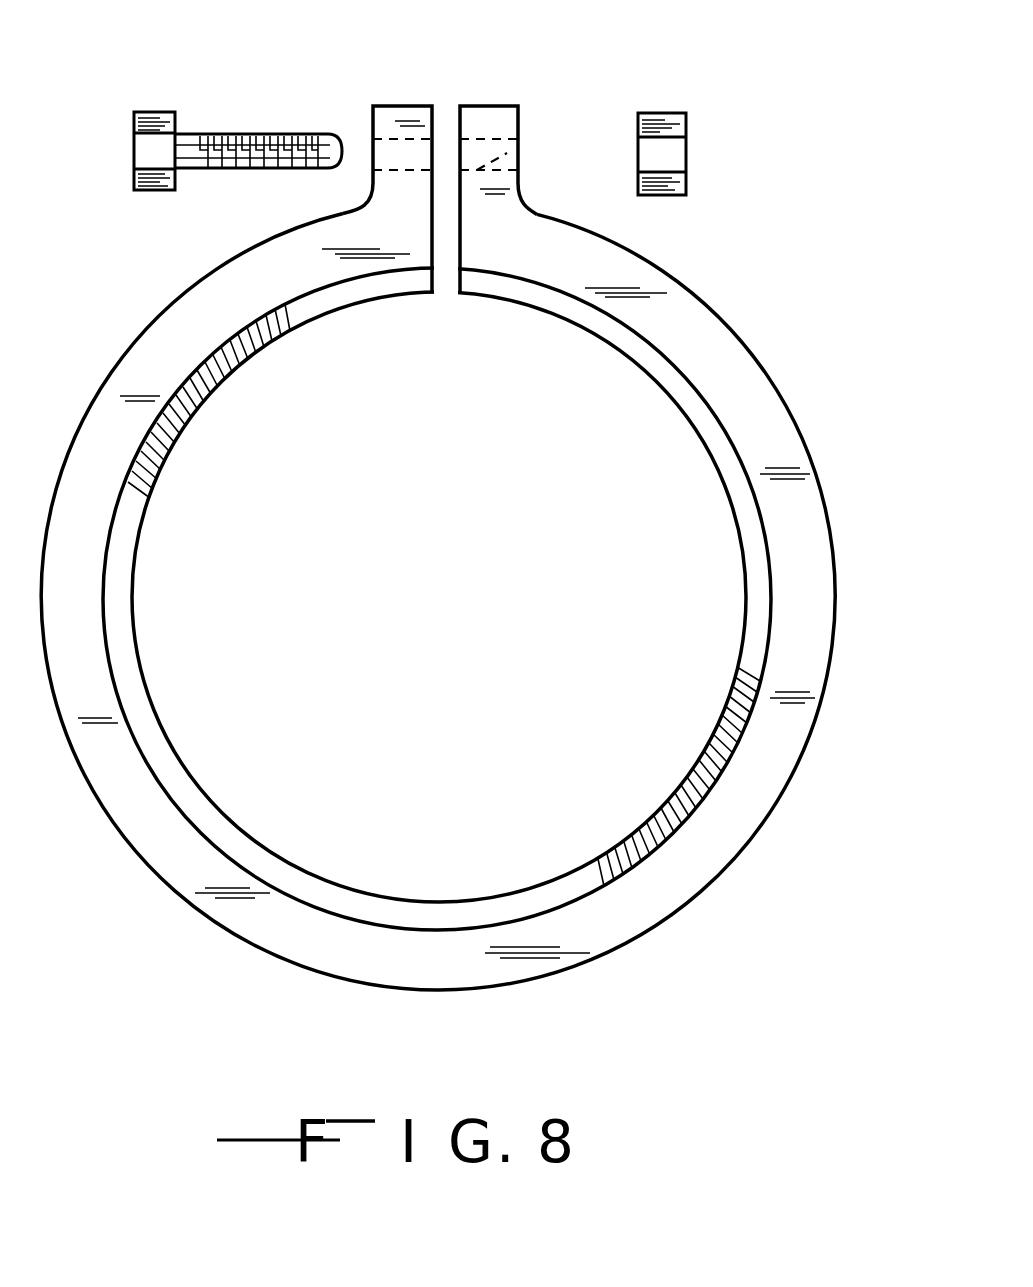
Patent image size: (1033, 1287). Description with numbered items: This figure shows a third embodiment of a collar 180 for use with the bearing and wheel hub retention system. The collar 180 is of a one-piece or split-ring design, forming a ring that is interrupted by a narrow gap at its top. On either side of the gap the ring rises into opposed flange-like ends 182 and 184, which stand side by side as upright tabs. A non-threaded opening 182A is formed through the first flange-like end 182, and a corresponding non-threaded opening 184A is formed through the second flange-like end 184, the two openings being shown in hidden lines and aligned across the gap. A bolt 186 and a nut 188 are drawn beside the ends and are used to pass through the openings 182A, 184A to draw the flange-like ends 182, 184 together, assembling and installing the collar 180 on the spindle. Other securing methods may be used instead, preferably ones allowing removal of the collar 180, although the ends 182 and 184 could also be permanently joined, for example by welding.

The collar 180 is at (758, 250).
The flange-like end 182 is at (398, 106).
The non-threaded opening 182A is at (398, 168).
The flange-like end 184 is at (487, 106).
The non-threaded opening 184A is at (520, 142).
The bolt 186 is at (248, 136).
The nut 188 is at (663, 113).